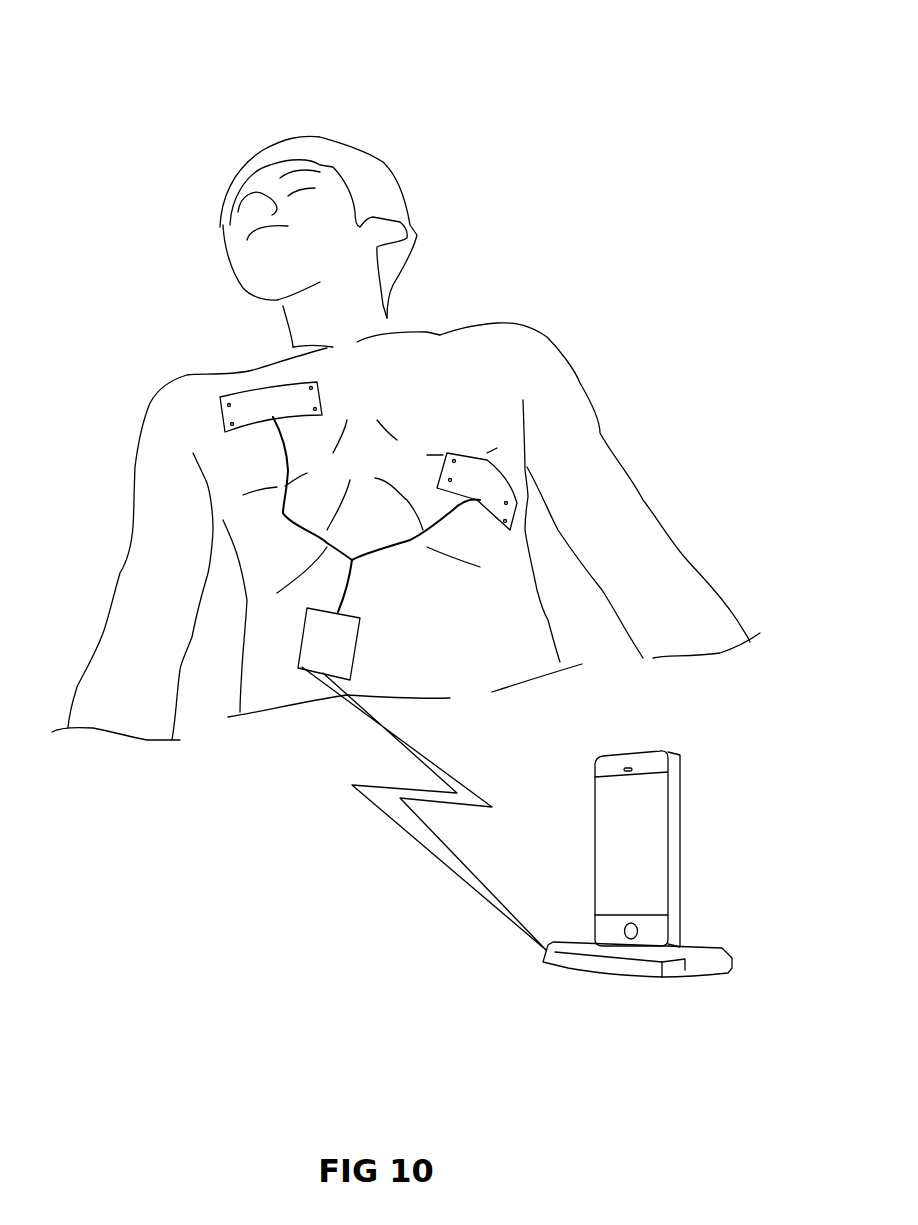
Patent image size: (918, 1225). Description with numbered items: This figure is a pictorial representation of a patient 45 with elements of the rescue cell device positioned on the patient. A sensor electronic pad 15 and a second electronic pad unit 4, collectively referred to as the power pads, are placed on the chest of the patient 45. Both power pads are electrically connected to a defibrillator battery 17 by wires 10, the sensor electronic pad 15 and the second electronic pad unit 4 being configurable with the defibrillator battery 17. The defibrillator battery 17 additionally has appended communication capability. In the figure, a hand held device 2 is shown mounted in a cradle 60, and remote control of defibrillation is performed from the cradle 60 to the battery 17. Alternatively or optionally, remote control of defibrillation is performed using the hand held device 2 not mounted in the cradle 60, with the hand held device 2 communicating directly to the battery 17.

The hand held device 2 is at (670, 773).
The second electronic pad unit 4 is at (473, 470).
The wires 10 is at (385, 562).
The sensor electronic pad 15 is at (263, 390).
The defibrillator battery 17 is at (302, 640).
The patient 45 is at (438, 335).
The cradle 60 is at (642, 978).